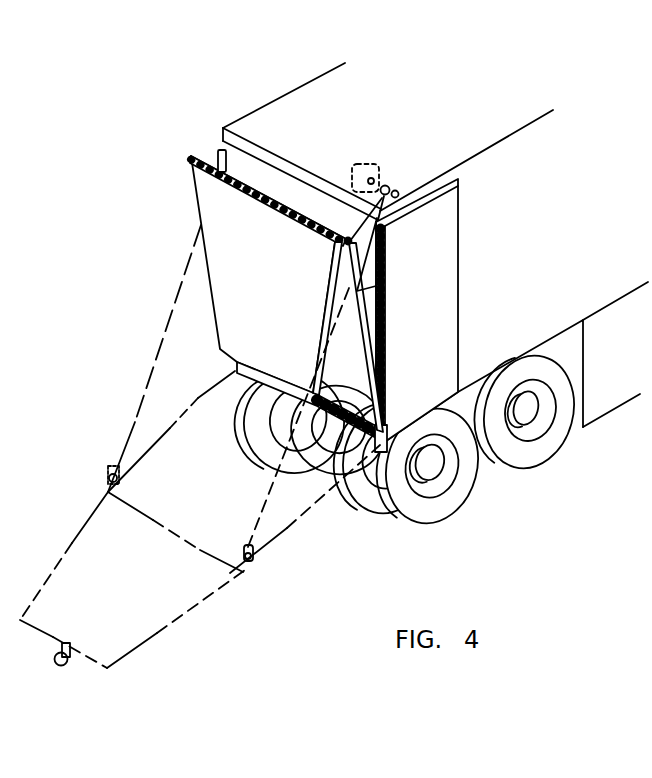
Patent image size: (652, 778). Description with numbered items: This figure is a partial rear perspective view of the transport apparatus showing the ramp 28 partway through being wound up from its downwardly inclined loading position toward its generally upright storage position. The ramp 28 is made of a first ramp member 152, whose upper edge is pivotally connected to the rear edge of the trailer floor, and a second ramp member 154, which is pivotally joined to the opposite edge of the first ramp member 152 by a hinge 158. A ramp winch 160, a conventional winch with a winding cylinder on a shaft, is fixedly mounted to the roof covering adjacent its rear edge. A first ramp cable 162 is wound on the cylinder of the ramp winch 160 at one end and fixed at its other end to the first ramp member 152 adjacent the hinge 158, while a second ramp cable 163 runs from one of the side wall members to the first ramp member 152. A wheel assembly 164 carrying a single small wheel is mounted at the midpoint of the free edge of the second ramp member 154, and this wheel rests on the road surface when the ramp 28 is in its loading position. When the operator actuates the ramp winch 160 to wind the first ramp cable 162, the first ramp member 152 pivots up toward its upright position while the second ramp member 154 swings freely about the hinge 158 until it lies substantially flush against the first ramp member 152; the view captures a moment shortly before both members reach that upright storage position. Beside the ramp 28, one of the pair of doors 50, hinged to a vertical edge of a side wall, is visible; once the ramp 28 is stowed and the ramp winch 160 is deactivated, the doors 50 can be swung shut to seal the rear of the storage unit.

The ramp 28 is at (209, 137).
The door 50 is at (422, 397).
The first ramp member 152 is at (224, 256).
The second ramp member 154 is at (353, 457).
The hinge 158 is at (218, 163).
The ramp winch 160 is at (376, 166).
The first ramp cable 162 is at (270, 503).
The second ramp cable 163 is at (137, 415).
The wheel assembly 164 is at (68, 665).